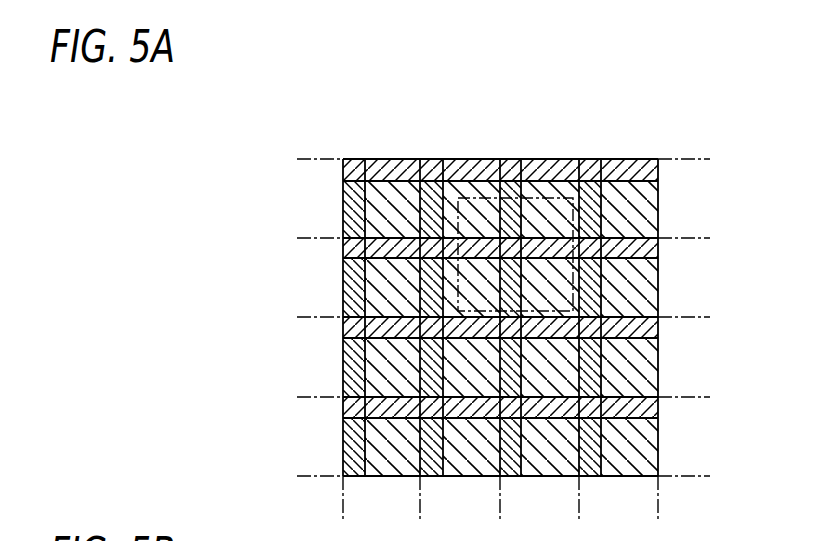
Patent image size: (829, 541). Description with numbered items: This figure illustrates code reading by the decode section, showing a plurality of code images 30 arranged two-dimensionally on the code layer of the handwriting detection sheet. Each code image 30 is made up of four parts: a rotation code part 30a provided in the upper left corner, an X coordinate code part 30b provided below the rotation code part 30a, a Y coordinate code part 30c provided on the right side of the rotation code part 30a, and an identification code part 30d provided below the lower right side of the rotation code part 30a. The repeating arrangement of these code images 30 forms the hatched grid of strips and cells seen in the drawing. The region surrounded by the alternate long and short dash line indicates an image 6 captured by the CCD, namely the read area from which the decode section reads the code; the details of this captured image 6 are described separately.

The code image 30 is at (326, 186).
The rotation code part 30a is at (360, 159).
The X coordinate code part 30b is at (405, 166).
The Y coordinate code part 30c is at (344, 226).
The identification code part 30d is at (343, 245).
The image 6 is at (606, 167).